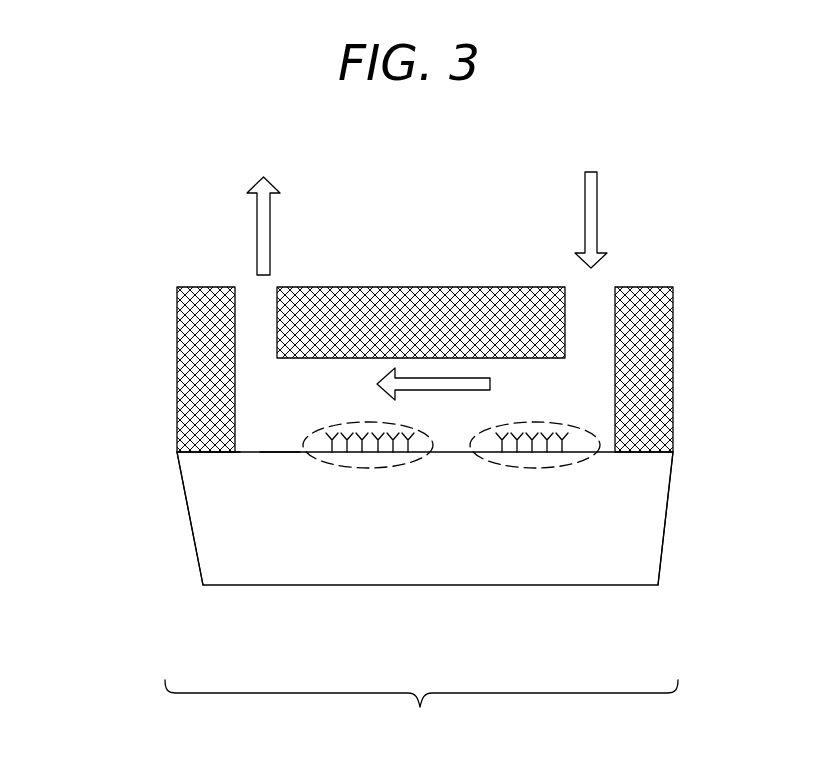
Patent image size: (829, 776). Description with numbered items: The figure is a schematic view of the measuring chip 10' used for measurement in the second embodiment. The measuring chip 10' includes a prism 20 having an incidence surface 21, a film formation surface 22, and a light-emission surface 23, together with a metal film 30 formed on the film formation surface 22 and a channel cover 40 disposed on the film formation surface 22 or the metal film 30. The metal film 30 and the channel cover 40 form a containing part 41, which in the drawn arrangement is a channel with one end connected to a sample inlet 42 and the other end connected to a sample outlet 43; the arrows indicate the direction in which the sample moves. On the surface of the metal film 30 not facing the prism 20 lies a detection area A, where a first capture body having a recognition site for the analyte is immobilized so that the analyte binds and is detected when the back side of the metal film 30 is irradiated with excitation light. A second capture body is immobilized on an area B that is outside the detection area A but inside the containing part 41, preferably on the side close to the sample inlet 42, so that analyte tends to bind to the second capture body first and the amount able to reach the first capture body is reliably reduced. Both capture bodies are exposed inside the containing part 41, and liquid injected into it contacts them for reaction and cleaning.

The measuring chip 10' is at (421, 709).
The prism 20 is at (647, 527).
The incidence surface 21 is at (661, 560).
The film formation surface 22 is at (277, 452).
The light-emission surface 23 is at (196, 553).
The metal film 30 is at (218, 452).
The channel cover 40 is at (672, 357).
The containing part 41 is at (268, 375).
The sample inlet 42 is at (576, 282).
The sample outlet 43 is at (255, 291).
The detection area A is at (303, 438).
The area outside the detection area B is at (593, 437).